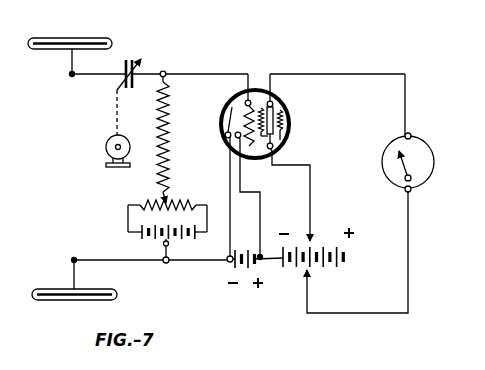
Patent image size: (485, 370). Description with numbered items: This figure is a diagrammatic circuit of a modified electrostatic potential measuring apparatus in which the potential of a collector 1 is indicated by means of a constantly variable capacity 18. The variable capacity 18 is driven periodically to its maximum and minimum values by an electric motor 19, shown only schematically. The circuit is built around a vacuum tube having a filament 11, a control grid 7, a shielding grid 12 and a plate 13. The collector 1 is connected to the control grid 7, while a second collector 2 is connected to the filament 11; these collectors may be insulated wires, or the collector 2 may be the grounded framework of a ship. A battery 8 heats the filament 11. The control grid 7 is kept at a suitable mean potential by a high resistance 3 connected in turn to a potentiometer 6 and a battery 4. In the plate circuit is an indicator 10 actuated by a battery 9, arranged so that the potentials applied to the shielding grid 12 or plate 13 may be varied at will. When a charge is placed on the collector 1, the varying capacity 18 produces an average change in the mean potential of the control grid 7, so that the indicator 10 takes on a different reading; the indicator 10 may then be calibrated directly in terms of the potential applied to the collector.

The collector 1 is at (60, 40).
The collector 2 is at (78, 299).
The high resistance 3 is at (142, 137).
The battery 4 is at (125, 233).
The potentiometer 6 is at (187, 203).
The control grid 7 is at (246, 98).
The battery 8 is at (229, 269).
The battery 9 is at (324, 272).
The indicator 10 is at (423, 154).
The filament 11 is at (217, 107).
The shielding grid 12 is at (293, 118).
The plate 13 is at (281, 106).
The constantly variable capacity 18 is at (137, 52).
The electric motor 19 is at (104, 155).